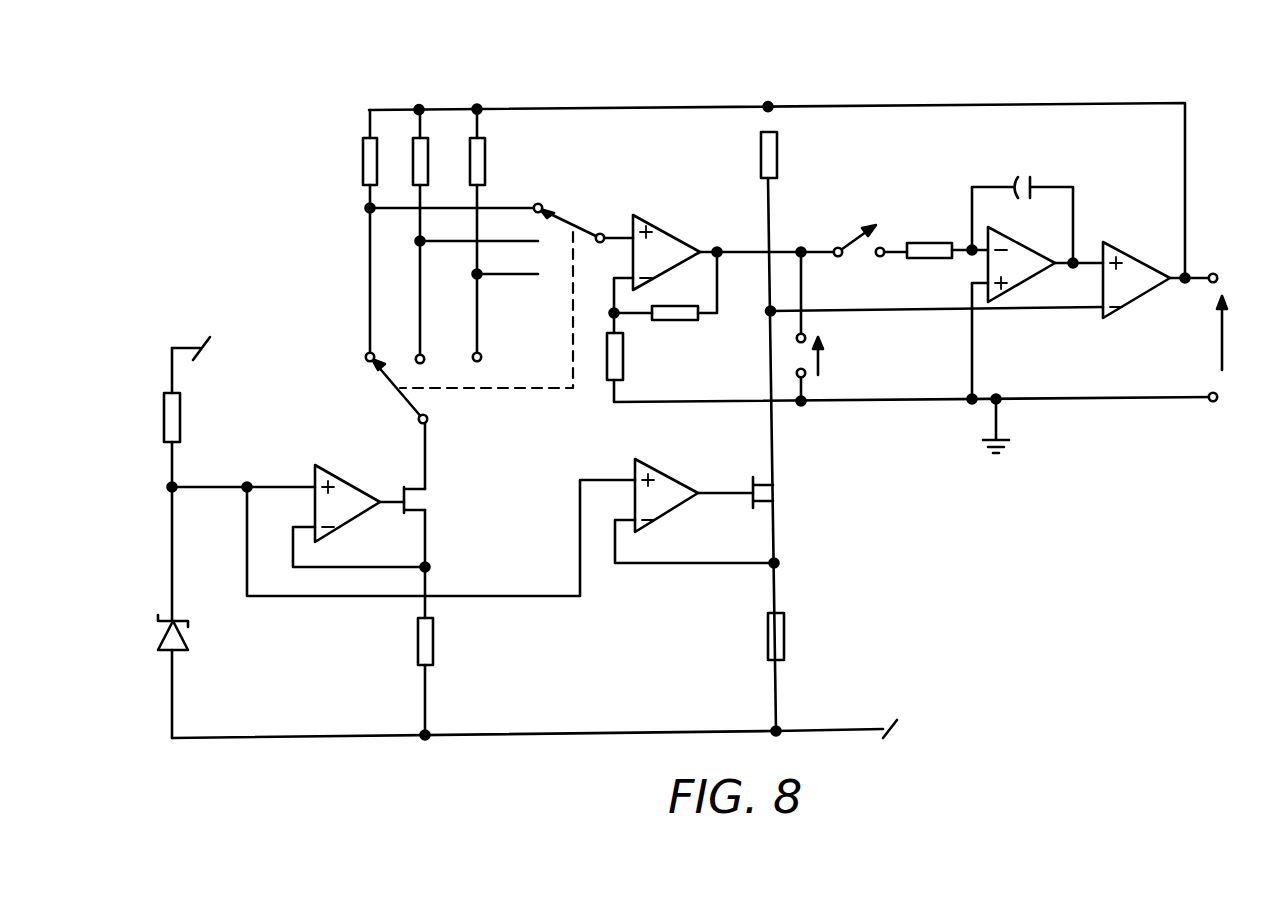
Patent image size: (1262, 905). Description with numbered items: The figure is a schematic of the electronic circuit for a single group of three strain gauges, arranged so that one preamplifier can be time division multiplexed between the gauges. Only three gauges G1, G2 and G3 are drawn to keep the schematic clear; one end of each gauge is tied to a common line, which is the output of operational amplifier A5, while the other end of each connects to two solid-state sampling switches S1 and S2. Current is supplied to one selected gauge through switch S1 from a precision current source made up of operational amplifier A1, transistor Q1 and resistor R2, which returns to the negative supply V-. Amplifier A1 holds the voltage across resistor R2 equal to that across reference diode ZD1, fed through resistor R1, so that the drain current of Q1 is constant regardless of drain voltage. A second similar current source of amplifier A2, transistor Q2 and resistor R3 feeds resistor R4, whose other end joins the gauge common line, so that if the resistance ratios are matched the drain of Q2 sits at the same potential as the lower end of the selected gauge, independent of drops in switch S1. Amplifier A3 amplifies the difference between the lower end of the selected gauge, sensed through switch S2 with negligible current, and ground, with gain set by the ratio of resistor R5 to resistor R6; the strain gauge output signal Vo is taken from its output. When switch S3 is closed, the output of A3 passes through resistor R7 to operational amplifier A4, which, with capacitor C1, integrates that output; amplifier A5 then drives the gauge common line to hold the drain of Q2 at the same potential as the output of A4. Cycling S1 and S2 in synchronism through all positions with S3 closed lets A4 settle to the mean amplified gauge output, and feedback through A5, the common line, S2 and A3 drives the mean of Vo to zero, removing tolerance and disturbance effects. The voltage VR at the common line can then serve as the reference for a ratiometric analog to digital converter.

The gauge G1 is at (355, 161).
The gauge G2 is at (406, 161).
The gauge G3 is at (462, 161).
The switch S1 is at (415, 388).
The switch S2 is at (569, 210).
The switch S3 is at (859, 251).
The operational amplifier A1 is at (347, 503).
The operational amplifier A2 is at (666, 495).
The amplifier A3 is at (666, 252).
The operational amplifier A4 is at (1021, 264).
The operational amplifier A5 is at (1136, 280).
The resistor R1 is at (156, 417).
The resistor R2 is at (408, 641).
The resistor R3 is at (760, 636).
The resistor R4 is at (786, 155).
The resistor R5 is at (675, 326).
The resistor R6 is at (631, 356).
The resistor R7 is at (929, 237).
The capacitor C1 is at (1022, 209).
The transistor Q1 is at (432, 500).
The transistor Q2 is at (782, 493).
The reference diode ZD1 is at (199, 635).
The negative supply V- is at (909, 731).
The strain gauge output signal Vo is at (831, 356).
The voltage Vr VR is at (1237, 333).